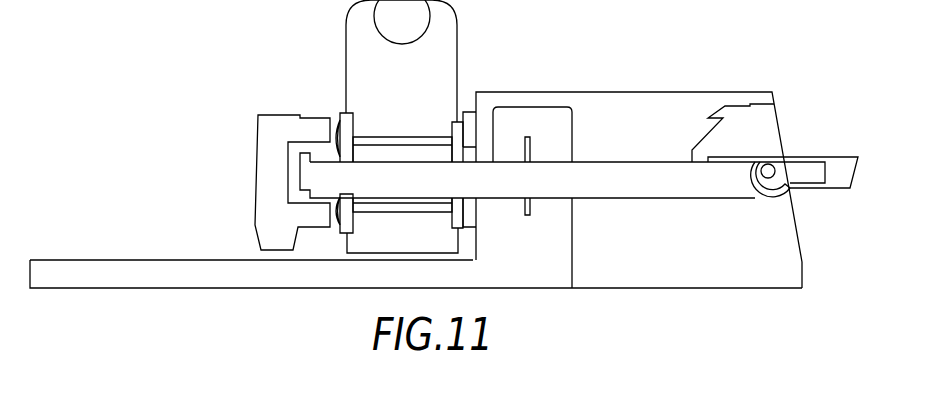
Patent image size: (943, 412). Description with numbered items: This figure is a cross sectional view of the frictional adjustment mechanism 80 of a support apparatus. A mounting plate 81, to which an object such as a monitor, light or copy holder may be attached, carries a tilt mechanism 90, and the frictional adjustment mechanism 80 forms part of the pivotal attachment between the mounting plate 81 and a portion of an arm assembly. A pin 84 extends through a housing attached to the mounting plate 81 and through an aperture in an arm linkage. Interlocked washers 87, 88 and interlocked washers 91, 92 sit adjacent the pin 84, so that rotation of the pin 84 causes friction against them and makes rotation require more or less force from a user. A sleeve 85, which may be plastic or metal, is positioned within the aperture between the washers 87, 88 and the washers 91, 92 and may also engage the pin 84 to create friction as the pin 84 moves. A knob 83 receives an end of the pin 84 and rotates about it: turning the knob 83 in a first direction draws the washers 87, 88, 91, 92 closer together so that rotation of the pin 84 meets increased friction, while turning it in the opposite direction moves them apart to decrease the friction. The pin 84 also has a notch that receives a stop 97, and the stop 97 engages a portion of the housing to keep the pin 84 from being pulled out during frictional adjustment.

The frictional adjustment mechanism 80 is at (259, 82).
The mounting plate 81 is at (137, 288).
The knob 83 is at (260, 175).
The pin 84 is at (630, 162).
The sleeve 85 is at (398, 137).
The washer 87 is at (471, 112).
The washer 88 is at (456, 122).
The tilt mechanism 90 is at (678, 232).
The washer 91 is at (344, 113).
The washer 92 is at (337, 119).
The stop 97 is at (530, 152).